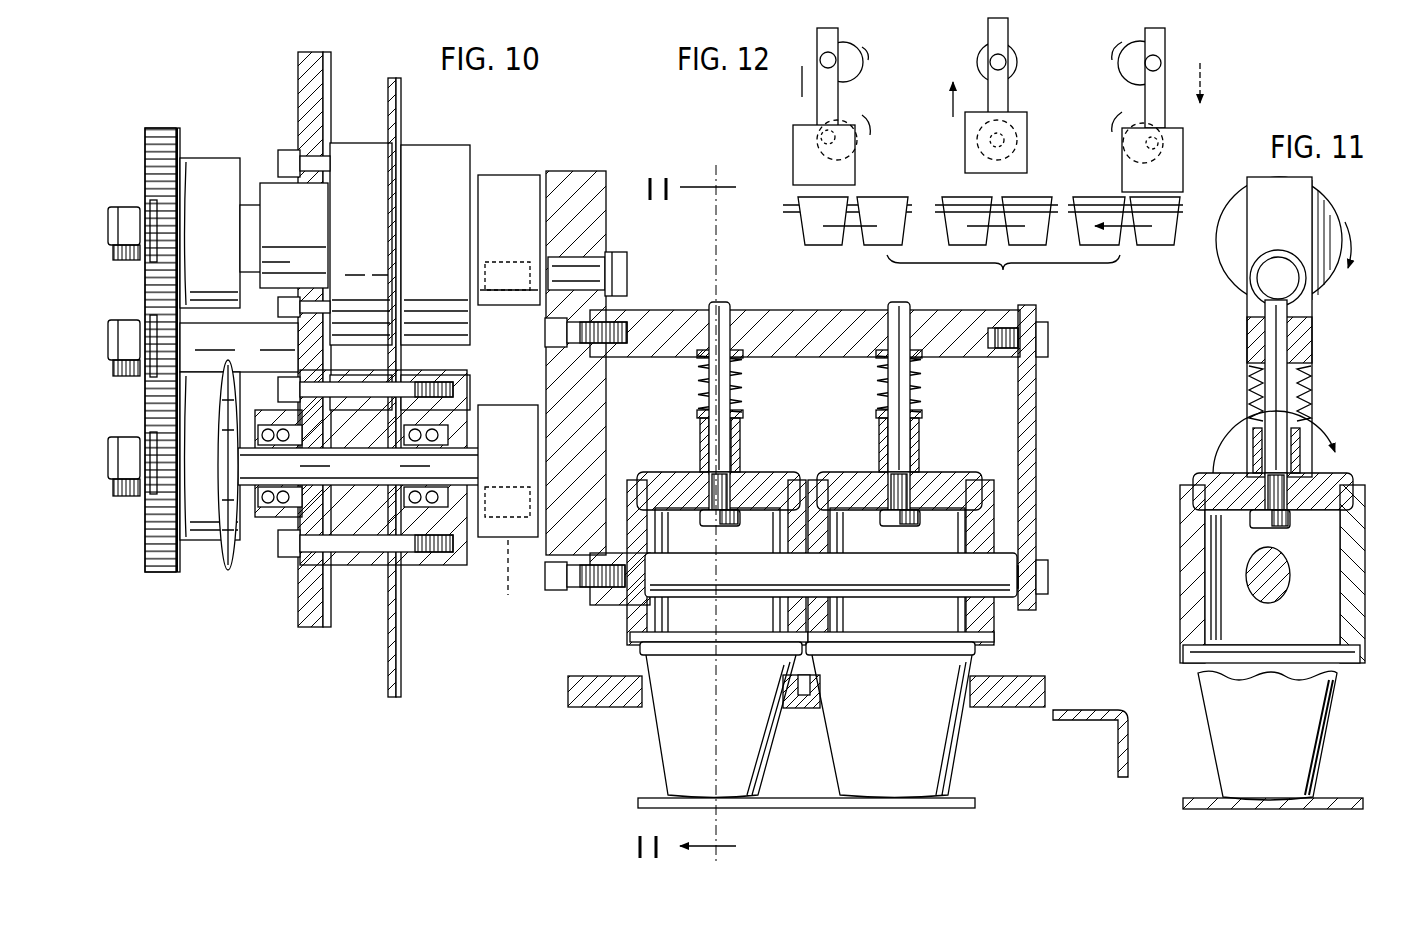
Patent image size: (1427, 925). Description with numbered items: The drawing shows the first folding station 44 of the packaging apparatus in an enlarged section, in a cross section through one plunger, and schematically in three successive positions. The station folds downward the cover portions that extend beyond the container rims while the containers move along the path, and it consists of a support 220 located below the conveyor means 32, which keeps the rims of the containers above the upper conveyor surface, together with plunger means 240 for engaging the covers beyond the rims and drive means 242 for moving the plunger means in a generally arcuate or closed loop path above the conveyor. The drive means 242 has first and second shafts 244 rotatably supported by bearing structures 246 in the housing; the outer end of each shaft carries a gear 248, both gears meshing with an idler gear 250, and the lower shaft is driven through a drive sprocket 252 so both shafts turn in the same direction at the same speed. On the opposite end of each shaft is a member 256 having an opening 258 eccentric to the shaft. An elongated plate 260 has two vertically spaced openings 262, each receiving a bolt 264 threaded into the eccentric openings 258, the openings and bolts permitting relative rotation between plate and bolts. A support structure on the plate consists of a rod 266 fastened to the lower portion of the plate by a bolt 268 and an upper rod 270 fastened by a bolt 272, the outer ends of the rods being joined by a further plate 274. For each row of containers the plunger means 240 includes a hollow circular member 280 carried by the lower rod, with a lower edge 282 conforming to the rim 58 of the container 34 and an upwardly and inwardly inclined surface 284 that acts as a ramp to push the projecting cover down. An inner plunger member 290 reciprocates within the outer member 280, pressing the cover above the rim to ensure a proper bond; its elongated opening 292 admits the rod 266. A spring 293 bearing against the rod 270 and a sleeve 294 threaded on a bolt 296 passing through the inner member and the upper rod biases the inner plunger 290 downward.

In FIG. 10, the conveyor means 32 is at (555, 690).
In FIG. 10, the container 34 is at (906, 770).
In FIG. 10, the first folding station 44 is at (617, 150).
In FIG. 10, the rim 58 is at (973, 667).
In FIG. 10, the support 220 is at (648, 800).
In FIG. 10, the plunger means 240 is at (1003, 637).
In FIG. 10, the drive means 242 is at (436, 604).
In FIG. 10, the shaft 244 is at (482, 220).
In FIG. 10, the bearing structure 246 is at (362, 170).
In FIG. 10, the gear 248 is at (165, 148).
In FIG. 10, the idler gear 250 is at (142, 320).
In FIG. 10, the drive sprocket 252 is at (228, 572).
In FIG. 10, the member 256 is at (522, 183).
In FIG. 11, the member 256 is at (1322, 228).
In FIG. 12, the member 256 is at (983, 57).
In FIG. 10, the opening 258 is at (513, 306).
In FIG. 10, the elongated plate 260 is at (580, 222).
In FIG. 10, the opening 262 is at (600, 275).
In FIG. 10, the bolt 264 is at (635, 300).
In FIG. 11, the bolt 264 is at (1263, 283).
In FIG. 10, the rod 266 is at (622, 597).
In FIG. 10, the bolt 268 is at (575, 600).
In FIG. 10, the upper rod 270 is at (772, 318).
In FIG. 10, the bolt 272 is at (485, 428).
In FIG. 10, the plate 274 is at (1042, 412).
In FIG. 10, the hollow circular member 280 is at (812, 478).
In FIG. 11, the hollow circular member 280 is at (1360, 560).
In FIG. 12, the hollow circular member 280 is at (795, 158).
In FIG. 10, the lower edge 282 is at (980, 680).
In FIG. 11, the lower edge 282 is at (1353, 657).
In FIG. 11, the inclined surface 284 is at (1348, 675).
In FIG. 10, the inner plunger member 290 is at (940, 483).
In FIG. 11, the inner plunger member 290 is at (1198, 478).
In FIG. 11, the elongated opening 292 is at (1257, 553).
In FIG. 10, the spring 293 is at (880, 388).
In FIG. 10, the sleeve 294 is at (888, 445).
In FIG. 10, the bolt 296 is at (900, 520).